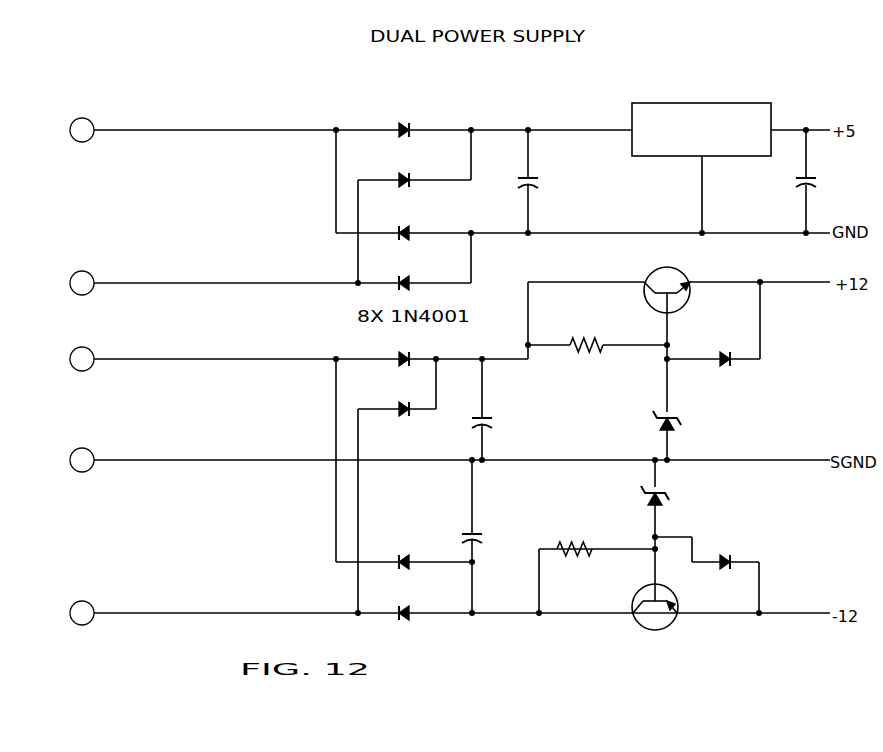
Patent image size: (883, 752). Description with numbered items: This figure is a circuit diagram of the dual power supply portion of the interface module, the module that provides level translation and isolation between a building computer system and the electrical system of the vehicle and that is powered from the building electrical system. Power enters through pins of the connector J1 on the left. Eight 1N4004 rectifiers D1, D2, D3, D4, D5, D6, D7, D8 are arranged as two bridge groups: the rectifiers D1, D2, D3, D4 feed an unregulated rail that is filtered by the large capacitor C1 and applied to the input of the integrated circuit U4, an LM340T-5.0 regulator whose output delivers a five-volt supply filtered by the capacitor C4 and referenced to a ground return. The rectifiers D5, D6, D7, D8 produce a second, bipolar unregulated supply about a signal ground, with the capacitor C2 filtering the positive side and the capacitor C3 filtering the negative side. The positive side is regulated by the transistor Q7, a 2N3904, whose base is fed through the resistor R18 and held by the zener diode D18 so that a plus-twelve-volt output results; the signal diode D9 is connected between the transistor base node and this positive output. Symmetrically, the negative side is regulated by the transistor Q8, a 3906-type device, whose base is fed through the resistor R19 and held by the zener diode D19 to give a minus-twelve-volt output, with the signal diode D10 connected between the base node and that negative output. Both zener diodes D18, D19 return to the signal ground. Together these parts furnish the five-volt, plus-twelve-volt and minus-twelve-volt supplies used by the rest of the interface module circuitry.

The connector J1 is at (87, 358).
The rectifier D1 is at (394, 121).
The rectifier D2 is at (394, 171).
The rectifier D3 is at (394, 222).
The rectifier D4 is at (394, 273).
The rectifier D5 is at (394, 349).
The rectifier D6 is at (394, 399).
The rectifier D7 is at (394, 551).
The rectifier D8 is at (394, 602).
The signal diode D9 is at (716, 349).
The signal diode D10 is at (716, 552).
The zener diode D18 is at (721, 417).
The zener diode D19 is at (710, 494).
The capacitor C1 is at (540, 181).
The capacitor C2 is at (495, 422).
The capacitor C3 is at (483, 536).
The capacitor C4 is at (817, 180).
The resistor R18 is at (597, 326).
The resistor R19 is at (579, 529).
The transistor Q7 is at (681, 283).
The transistor Q8 is at (670, 613).
The integrated circuit U4 is at (702, 120).